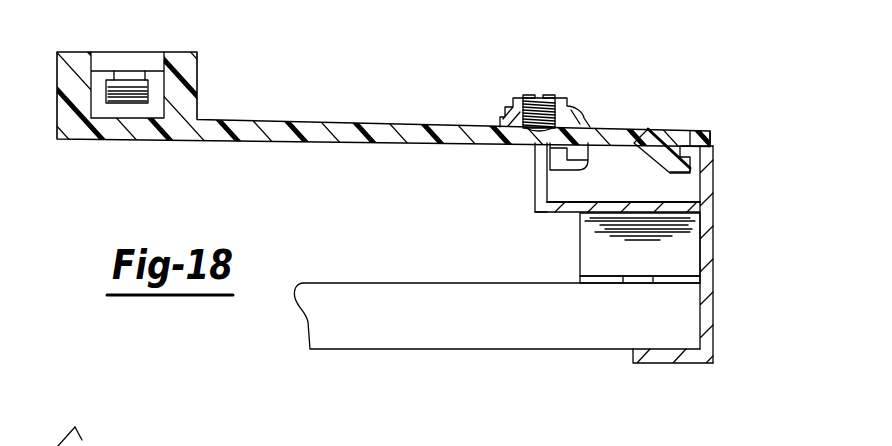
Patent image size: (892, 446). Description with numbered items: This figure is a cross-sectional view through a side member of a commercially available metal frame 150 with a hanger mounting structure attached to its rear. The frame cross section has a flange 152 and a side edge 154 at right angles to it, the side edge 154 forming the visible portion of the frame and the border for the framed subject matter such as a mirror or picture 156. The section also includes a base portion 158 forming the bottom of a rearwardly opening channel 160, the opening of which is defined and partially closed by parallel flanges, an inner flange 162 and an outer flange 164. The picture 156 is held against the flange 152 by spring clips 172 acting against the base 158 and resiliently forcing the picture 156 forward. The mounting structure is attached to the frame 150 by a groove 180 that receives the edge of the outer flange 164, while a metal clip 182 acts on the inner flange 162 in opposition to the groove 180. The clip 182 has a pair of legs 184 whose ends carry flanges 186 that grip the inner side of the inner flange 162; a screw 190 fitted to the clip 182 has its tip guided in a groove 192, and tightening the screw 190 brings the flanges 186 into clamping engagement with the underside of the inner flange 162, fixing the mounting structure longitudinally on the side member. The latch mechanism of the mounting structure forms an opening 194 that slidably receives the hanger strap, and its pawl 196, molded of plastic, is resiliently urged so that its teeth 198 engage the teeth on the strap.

The metal frame 150 is at (722, 185).
The flange 152 is at (680, 364).
The side edge 154 is at (717, 272).
The picture 156 is at (546, 349).
The base portion 158 is at (570, 203).
The channel 160 is at (545, 190).
The inner flange 162 is at (547, 167).
The outer flange 164 is at (707, 143).
The spring clips 172 is at (587, 262).
The groove 180 is at (692, 130).
The metal clip 182 is at (578, 112).
The legs 184 is at (625, 128).
The flanges 186 is at (562, 173).
The screw 190 is at (562, 43).
The groove 192 is at (602, 128).
The opening 194 is at (155, 108).
The pawl 196 is at (122, 97).
The teeth 198 is at (120, 100).